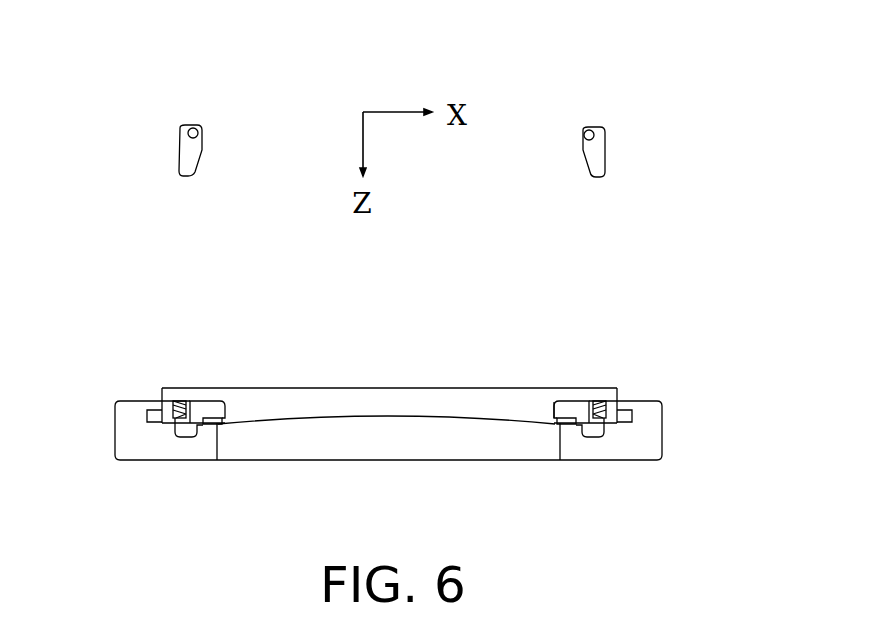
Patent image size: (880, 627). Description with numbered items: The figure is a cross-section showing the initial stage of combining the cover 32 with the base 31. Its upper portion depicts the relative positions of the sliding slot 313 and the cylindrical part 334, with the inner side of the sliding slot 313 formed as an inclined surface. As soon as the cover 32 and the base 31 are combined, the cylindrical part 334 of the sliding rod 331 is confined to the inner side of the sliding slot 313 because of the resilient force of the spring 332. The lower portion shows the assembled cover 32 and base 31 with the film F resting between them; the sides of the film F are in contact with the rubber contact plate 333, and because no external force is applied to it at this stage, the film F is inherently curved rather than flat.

The base 31 is at (630, 456).
The cover 32 is at (590, 400).
The sliding rod 331 is at (565, 400).
The spring 332 is at (620, 403).
The rubber contact plate 333 is at (560, 427).
The cylindrical part 334 is at (188, 122).
The sliding slot 313 is at (178, 158).
The film F is at (383, 415).